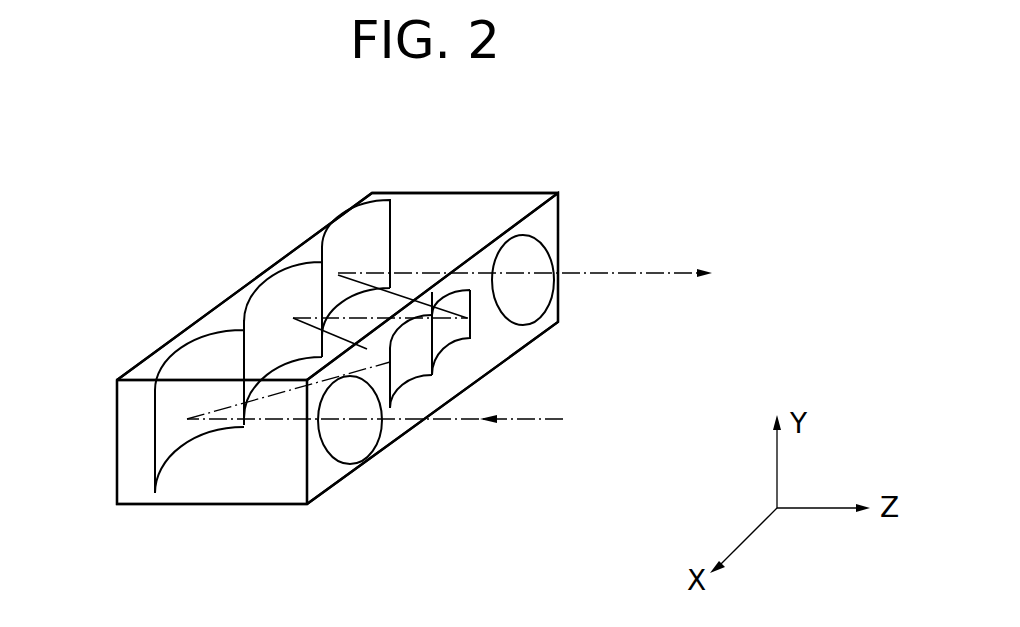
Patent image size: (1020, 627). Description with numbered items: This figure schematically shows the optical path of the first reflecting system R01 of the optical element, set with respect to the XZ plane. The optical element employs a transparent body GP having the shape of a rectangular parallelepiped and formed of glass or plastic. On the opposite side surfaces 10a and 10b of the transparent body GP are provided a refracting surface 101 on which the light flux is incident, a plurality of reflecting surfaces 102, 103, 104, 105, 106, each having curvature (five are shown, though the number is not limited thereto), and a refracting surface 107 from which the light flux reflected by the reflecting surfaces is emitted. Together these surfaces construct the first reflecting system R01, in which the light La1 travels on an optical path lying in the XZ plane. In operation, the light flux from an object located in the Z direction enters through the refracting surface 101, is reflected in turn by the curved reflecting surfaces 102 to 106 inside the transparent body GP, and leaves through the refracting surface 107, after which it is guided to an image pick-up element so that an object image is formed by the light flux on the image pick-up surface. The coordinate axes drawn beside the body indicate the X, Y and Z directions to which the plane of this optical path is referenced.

The first reflecting system R01 is at (215, 192).
The transparent body GP is at (482, 190).
The side surface 10a is at (552, 213).
The side surface 10b is at (137, 430).
The refracting surface 101 is at (372, 448).
The reflecting surface 102 is at (212, 353).
The reflecting surface 103 is at (415, 370).
The reflecting surface 104 is at (283, 288).
The reflecting surface 105 is at (473, 327).
The reflecting surface 106 is at (352, 238).
The refracting surface 107 is at (543, 297).
The light La1 is at (535, 422).